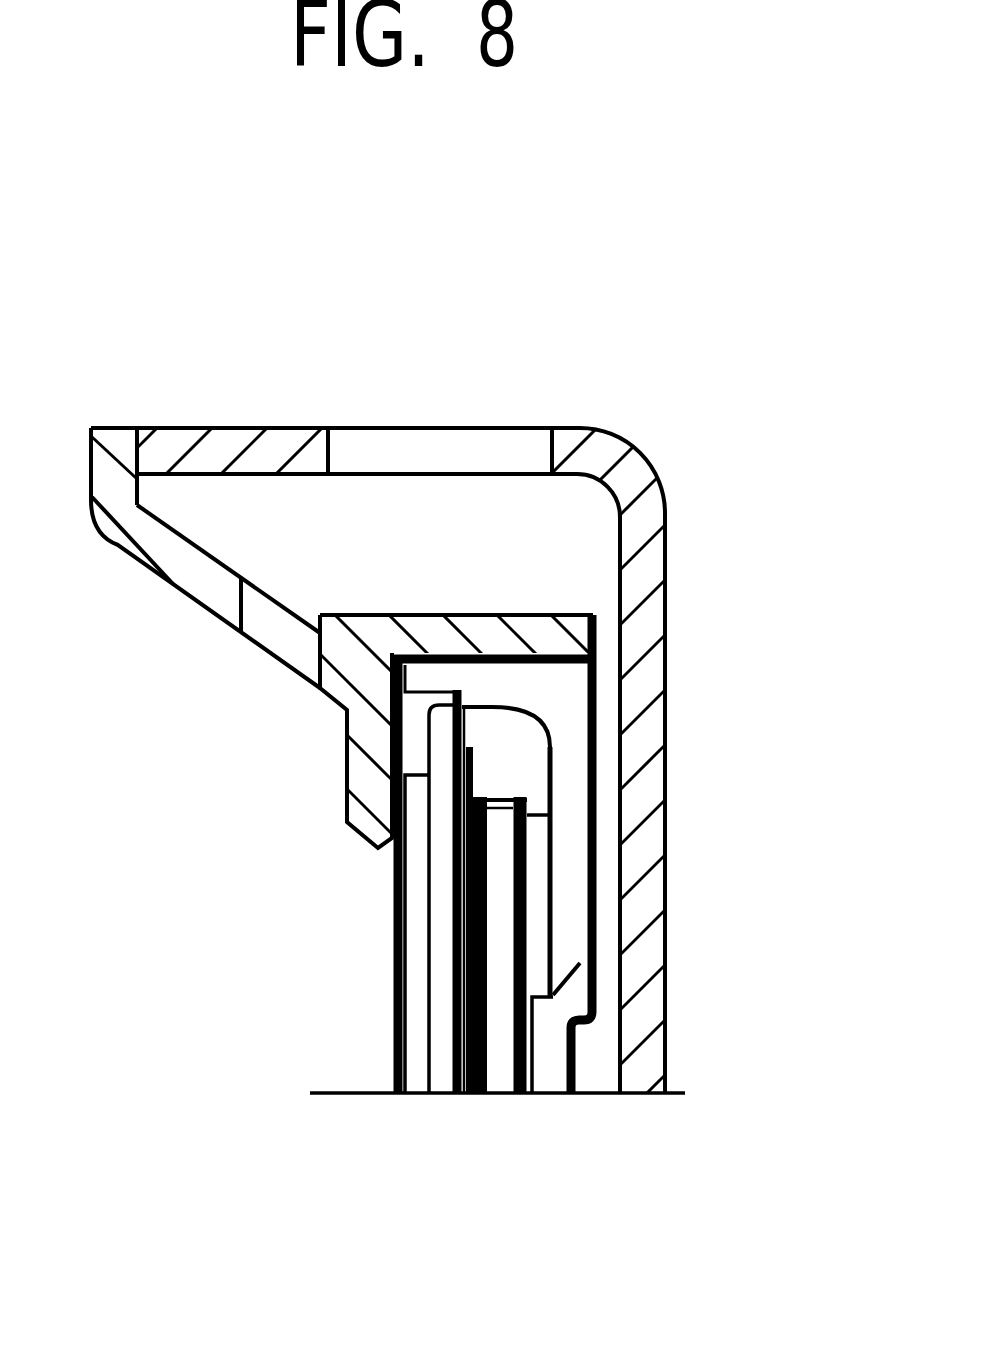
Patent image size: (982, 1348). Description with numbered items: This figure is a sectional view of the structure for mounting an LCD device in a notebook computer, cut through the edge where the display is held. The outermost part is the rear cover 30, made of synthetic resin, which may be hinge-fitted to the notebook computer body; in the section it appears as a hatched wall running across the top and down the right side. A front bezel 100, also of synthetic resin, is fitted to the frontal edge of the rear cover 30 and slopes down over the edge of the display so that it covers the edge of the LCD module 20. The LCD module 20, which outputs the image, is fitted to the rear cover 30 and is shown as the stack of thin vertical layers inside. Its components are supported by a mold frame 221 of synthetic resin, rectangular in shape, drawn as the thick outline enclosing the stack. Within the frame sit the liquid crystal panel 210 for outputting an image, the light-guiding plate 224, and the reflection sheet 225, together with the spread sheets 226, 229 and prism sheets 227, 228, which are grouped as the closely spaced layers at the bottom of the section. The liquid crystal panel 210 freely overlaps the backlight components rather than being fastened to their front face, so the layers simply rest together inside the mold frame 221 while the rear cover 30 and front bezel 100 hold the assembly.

The rear cover 30 is at (647, 625).
The front bezel 100 is at (158, 542).
The mold frame 221 is at (515, 757).
The liquid crystal panel 210 is at (440, 883).
The LCD module 20 is at (365, 976).
The reflection sheet 225 is at (520, 893).
The light-guiding plate 224 is at (500, 975).
The spread sheet 226 is at (482, 1093).
The prism sheet 227 is at (475, 1177).
The prism sheet 228 is at (475, 1177).
The spread sheet 229 is at (475, 1177).